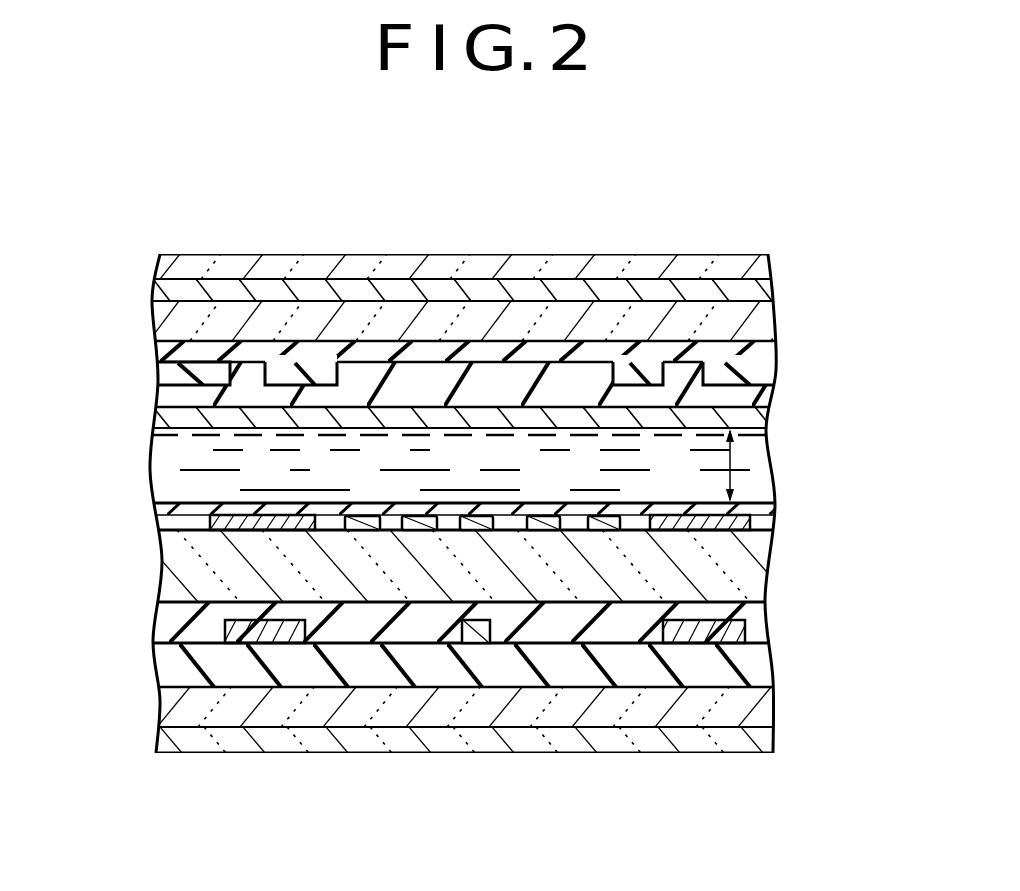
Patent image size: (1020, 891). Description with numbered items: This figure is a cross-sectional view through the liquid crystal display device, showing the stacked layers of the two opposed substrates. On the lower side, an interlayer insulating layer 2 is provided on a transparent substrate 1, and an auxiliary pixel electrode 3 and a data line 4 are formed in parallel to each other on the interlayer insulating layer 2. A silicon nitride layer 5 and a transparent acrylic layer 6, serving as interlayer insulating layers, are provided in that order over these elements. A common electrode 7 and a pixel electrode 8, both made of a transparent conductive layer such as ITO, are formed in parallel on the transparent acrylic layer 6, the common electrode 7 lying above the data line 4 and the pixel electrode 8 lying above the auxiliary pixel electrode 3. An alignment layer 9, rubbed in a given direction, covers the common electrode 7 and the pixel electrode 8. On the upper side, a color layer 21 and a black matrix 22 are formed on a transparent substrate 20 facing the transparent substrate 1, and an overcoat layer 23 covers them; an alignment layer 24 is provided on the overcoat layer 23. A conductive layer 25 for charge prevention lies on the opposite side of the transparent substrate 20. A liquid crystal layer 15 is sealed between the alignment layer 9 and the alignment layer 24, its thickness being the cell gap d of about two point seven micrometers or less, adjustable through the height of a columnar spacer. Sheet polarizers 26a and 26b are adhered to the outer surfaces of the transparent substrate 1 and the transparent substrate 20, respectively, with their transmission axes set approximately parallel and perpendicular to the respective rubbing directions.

The transparent substrate 1 is at (748, 712).
The interlayer insulating layer 2 is at (745, 670).
The auxiliary pixel electrode 3 is at (477, 643).
The data line 4 is at (225, 635).
The silicon nitride layer 5 is at (750, 613).
The transparent acrylic layer 6 is at (745, 550).
The common electrode 7 is at (215, 522).
The pixel electrode 8 is at (362, 525).
The alignment layer 9 is at (755, 512).
The liquid crystal layer 15 is at (185, 447).
The transparent substrate 20 is at (750, 318).
The color layer 21 is at (333, 352).
The black matrix 22 is at (750, 352).
The overcoat layer 23 is at (745, 400).
The alignment layer 24 is at (750, 418).
The conductive layer 25 is at (750, 290).
The sheet polarizer 26a is at (655, 740).
The sheet polarizer 26b is at (515, 268).
The cell gap d is at (745, 465).